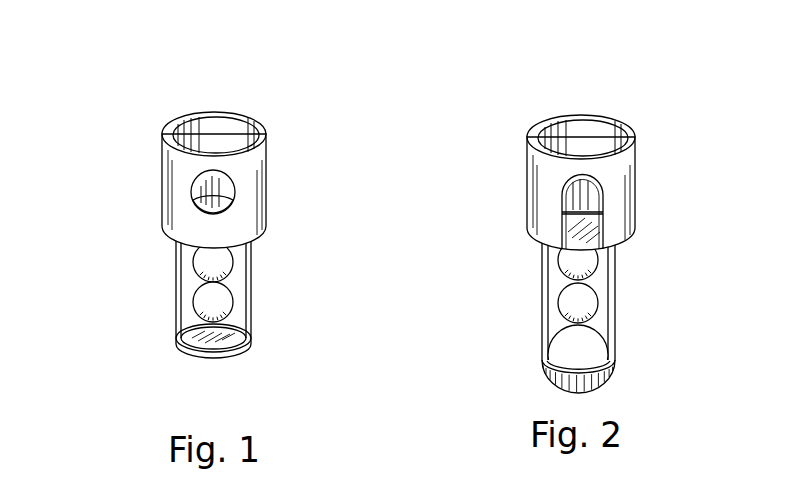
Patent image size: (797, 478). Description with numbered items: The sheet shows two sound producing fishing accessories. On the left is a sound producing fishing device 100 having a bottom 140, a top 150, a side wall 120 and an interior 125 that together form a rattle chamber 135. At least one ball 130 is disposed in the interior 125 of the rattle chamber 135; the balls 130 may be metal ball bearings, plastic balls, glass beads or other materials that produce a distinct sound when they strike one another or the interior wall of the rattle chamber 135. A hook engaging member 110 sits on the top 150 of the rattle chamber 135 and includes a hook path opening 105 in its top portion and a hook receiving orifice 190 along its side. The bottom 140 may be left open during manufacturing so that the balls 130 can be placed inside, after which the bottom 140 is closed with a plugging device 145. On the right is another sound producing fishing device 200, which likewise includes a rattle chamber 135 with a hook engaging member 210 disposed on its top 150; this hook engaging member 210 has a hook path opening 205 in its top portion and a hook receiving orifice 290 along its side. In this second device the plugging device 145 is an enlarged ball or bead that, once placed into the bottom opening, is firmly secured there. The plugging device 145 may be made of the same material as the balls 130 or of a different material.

In FIG. 1, the sound producing fishing device 100 is at (168, 80).
In FIG. 1, the hook path opening 105 is at (228, 125).
In FIG. 1, the hook engaging member 110 is at (163, 183).
In FIG. 1, the side wall 120 is at (248, 262).
In FIG. 1, the interior 125 is at (187, 318).
In FIG. 1, the ball 130 is at (200, 295).
In FIG. 1, the rattle chamber 135 is at (275, 287).
In FIG. 2, the rattle chamber 135 is at (637, 300).
In FIG. 1, the bottom 140 is at (178, 348).
In FIG. 1, the plugging device 145 is at (238, 348).
In FIG. 2, the plugging device 145 is at (607, 380).
In FIG. 1, the top 150 is at (220, 207).
In FIG. 2, the top 150 is at (602, 223).
In FIG. 1, the hook receiving orifice 190 is at (225, 178).
In FIG. 2, the sound producing fishing device 200 is at (533, 83).
In FIG. 2, the hook path opening 205 is at (592, 127).
In FIG. 2, the hook engaging member 210 is at (532, 183).
In FIG. 2, the hook receiving orifice 290 is at (595, 190).